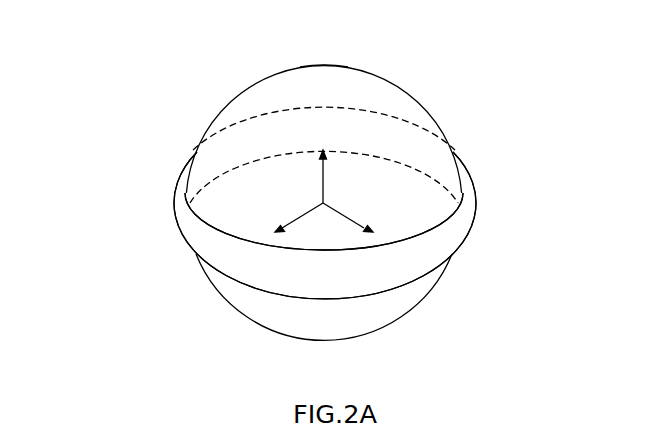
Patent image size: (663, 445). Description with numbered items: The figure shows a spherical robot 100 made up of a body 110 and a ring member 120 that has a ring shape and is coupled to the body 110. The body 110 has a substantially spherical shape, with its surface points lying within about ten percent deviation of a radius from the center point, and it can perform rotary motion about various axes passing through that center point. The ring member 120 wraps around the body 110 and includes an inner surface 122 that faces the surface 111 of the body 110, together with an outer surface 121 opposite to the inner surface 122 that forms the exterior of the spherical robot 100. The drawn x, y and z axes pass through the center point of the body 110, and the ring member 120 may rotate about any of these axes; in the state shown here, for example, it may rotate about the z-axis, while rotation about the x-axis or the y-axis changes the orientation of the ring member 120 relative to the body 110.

The spherical robot 100 is at (72, 72).
The body 110 is at (405, 90).
The surface of the body 111 is at (322, 65).
The ring member 120 is at (363, 192).
The outer surface 121 is at (450, 230).
The inner surface 122 is at (423, 150).